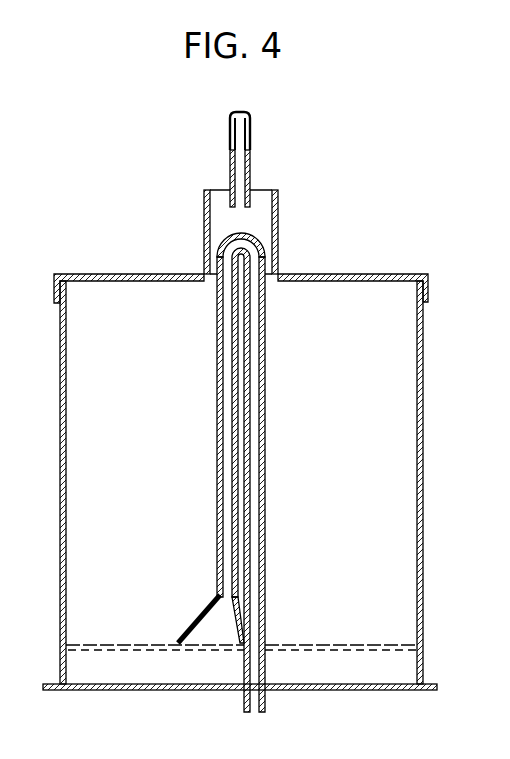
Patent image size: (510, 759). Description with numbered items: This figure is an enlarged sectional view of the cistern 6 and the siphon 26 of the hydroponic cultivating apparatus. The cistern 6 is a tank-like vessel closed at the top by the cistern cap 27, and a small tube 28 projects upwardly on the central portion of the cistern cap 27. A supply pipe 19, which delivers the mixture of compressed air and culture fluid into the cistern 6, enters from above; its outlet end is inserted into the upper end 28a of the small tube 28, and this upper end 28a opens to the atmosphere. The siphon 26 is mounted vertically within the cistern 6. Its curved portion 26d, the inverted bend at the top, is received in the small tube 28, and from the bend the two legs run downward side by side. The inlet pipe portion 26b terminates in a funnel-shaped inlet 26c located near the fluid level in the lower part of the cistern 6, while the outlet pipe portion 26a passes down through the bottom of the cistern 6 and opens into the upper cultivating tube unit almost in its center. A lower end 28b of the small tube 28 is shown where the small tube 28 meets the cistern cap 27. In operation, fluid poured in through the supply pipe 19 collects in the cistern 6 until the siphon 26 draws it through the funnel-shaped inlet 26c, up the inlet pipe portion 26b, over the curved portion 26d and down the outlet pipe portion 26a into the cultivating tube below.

The cistern 6 is at (253, 465).
The supply pipe 19 is at (243, 123).
The siphon 26 is at (251, 462).
The outlet pipe portion 26a is at (260, 604).
The inlet pipe portion 26b is at (225, 510).
The funnel-shaped inlet 26c is at (199, 641).
The curved portion 26d is at (248, 236).
The cistern cap 27 is at (381, 276).
The small tube 28 is at (258, 240).
The upper end 28a is at (226, 197).
The housing opening 28b is at (210, 283).